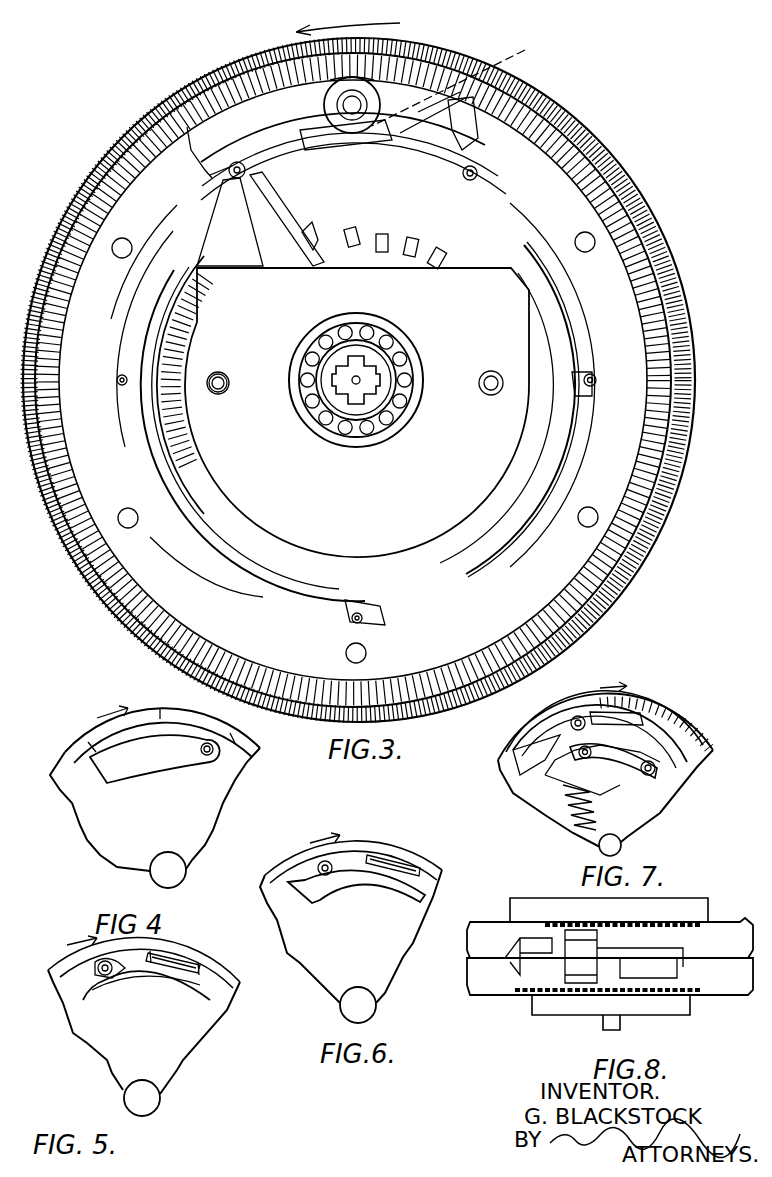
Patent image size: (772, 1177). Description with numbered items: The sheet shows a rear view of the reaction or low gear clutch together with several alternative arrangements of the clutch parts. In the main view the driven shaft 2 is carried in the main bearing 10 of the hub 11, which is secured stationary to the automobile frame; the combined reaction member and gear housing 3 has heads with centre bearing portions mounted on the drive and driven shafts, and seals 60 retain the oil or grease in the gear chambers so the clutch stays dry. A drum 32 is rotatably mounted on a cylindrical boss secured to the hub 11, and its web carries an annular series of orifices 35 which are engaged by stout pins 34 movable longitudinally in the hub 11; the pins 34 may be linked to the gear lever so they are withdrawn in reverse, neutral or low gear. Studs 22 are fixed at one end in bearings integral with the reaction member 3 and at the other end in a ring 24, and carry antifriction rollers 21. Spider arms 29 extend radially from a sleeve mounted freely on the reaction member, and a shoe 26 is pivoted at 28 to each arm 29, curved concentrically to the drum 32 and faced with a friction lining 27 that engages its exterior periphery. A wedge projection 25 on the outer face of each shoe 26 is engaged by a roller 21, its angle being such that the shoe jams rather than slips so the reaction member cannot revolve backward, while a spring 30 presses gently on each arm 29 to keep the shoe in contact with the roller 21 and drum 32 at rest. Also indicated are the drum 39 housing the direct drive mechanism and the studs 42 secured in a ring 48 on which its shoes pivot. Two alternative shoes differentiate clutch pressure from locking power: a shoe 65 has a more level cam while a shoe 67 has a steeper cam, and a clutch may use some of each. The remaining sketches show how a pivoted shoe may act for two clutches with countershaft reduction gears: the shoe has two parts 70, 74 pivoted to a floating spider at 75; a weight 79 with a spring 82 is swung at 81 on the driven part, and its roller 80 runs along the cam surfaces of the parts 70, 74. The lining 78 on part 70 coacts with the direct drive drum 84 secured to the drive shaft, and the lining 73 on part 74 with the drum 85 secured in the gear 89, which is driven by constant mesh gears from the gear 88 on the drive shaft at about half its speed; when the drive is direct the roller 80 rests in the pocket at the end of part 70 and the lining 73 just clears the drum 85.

In FIG. 3, the driven shaft 2 is at (352, 390).
In FIG. 3, the combined reaction member and gear housing 3 is at (492, 60).
In FIG. 3, the main bearing 10 is at (417, 368).
In FIG. 3, the hub 11 is at (507, 330).
In FIG. 3, the antifriction rollers 21 is at (357, 77).
In FIG. 3, the studs 22 is at (355, 103).
In FIG. 3, the ring 24 is at (487, 123).
In FIG. 3, the wedge projection 25 is at (500, 83).
In FIG. 3, the shoes 26 is at (402, 140).
In FIG. 3, the friction lining 27 is at (360, 152).
In FIG. 3, the pivot 28 is at (212, 181).
In FIG. 3, the spider arms 29 is at (280, 255).
In FIG. 3, the spring 30 is at (336, 255).
In FIG. 3, the drum 32 is at (462, 200).
In FIG. 3, the pins 34 is at (222, 390).
In FIG. 3, the orifices 35 is at (437, 262).
In FIG. 5, the drum 39 is at (220, 964).
In FIG. 3, the studs 42 is at (610, 222).
In FIG. 3, the ring 48 is at (263, 77).
In FIG. 3, the seals 60 is at (316, 350).
In FIG. 5, the shoe with level cam 65 is at (148, 978).
In FIG. 6, the shoe with steeper cam 67 is at (370, 872).
In FIG. 7, the shoe part 70 is at (623, 730).
In FIG. 8, the shoe part 70 is at (645, 948).
In FIG. 7, the lining 73 is at (530, 742).
In FIG. 7, the shoe part 74 is at (552, 737).
In FIG. 8, the shoe part 74 is at (550, 962).
In FIG. 7, the pivot 75 is at (580, 718).
In FIG. 7, the lining 78 is at (633, 710).
In FIG. 7, the weight 79 is at (607, 762).
In FIG. 7, the roller 80 is at (613, 761).
In FIG. 7, the pivot 81 is at (647, 775).
In FIG. 7, the spring 82 is at (573, 803).
In FIG. 7, the direct drive drum 84 is at (693, 727).
In FIG. 8, the direct drive drum 84 is at (722, 985).
In FIG. 7, the drum 85 is at (510, 747).
In FIG. 8, the drum 85 is at (488, 930).
In FIG. 8, the gear 88 is at (552, 1007).
In FIG. 8, the gear 89 is at (609, 897).